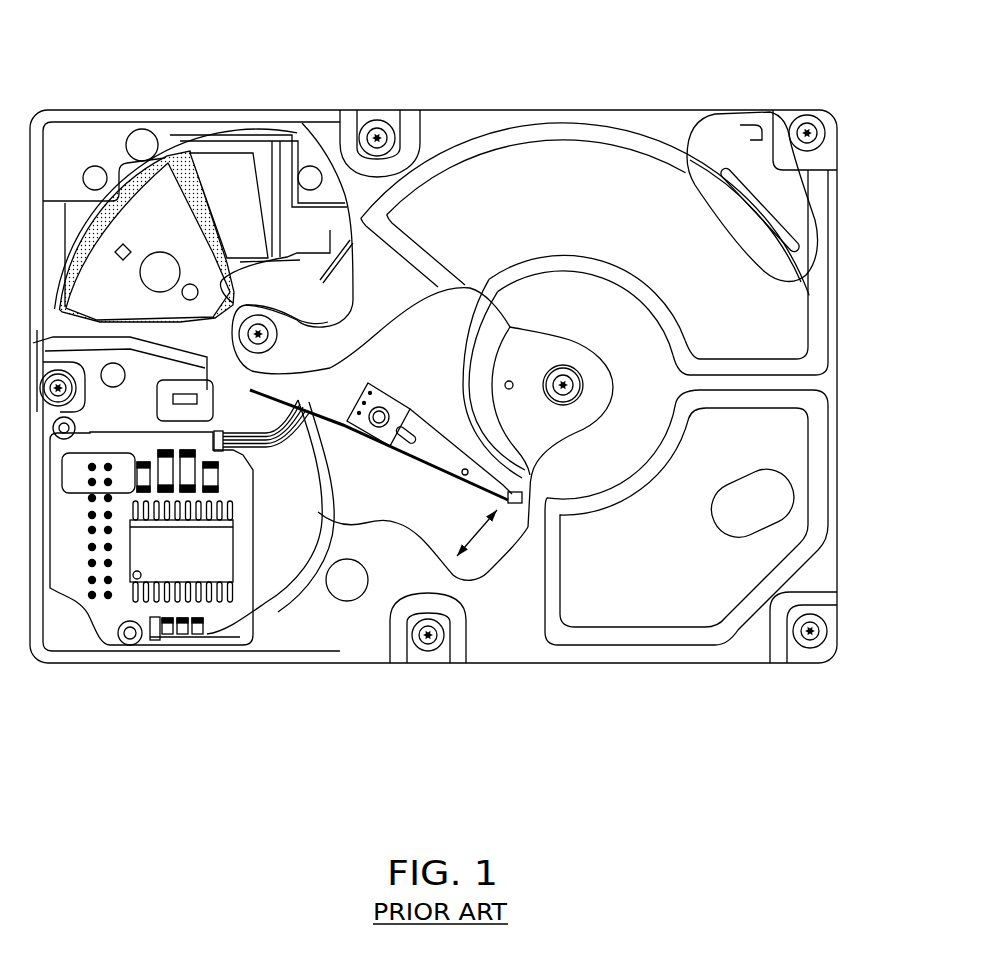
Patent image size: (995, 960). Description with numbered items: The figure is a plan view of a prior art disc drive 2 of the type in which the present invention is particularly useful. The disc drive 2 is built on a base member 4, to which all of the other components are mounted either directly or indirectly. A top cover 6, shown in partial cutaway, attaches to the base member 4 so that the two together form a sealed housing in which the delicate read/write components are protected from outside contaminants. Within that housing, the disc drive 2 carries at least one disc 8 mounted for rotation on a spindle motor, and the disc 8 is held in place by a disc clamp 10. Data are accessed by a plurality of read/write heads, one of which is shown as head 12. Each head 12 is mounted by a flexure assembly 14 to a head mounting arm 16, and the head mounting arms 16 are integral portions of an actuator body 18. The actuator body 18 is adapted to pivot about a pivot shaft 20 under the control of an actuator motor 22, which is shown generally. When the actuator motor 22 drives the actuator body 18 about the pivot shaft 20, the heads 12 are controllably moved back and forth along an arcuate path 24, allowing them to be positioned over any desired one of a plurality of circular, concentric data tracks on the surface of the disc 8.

The disc drive 2 is at (433, 386).
The base member 4 is at (168, 668).
The top cover 6 is at (829, 378).
The disc 8 is at (396, 524).
The disc clamp 10 is at (558, 434).
The read/write head 12 is at (511, 507).
The flexure assembly 14 is at (440, 466).
The head mounting arm 16 is at (336, 402).
The actuator body 18 is at (301, 276).
The pivot shaft 20 is at (240, 300).
The actuator motor 22 is at (210, 139).
The arcuate path 24 is at (482, 540).